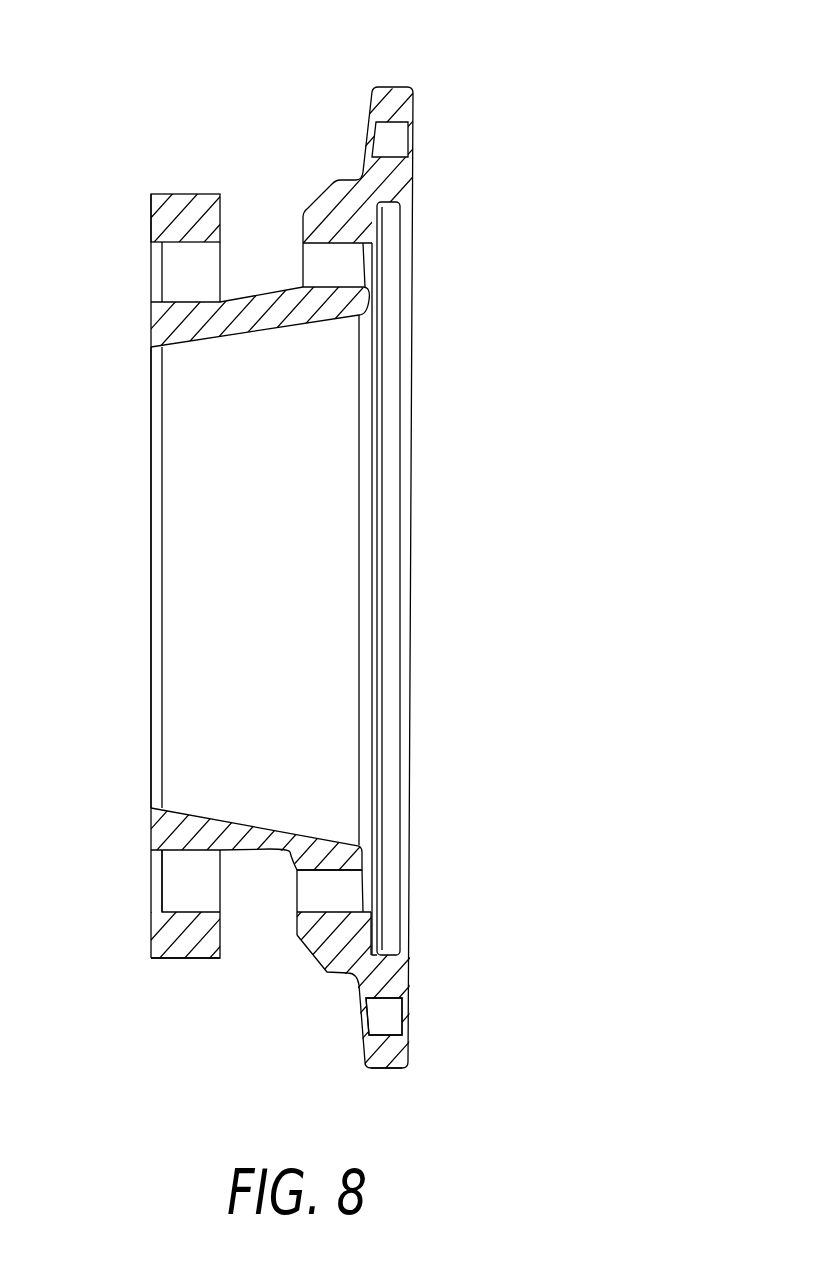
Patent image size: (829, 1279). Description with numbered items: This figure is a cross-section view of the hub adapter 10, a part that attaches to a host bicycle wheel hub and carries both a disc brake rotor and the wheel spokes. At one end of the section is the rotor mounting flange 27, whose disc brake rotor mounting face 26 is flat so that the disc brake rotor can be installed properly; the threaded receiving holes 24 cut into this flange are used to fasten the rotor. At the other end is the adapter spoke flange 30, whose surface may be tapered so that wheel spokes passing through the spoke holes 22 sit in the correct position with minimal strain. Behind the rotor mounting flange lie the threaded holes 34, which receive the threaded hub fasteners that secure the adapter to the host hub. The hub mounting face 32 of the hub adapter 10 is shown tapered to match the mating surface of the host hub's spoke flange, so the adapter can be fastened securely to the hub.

The hub adapter 10 is at (404, 76).
The spoke holes 22 is at (387, 1017).
The threaded receiving holes 24 is at (180, 880).
The disc brake rotor mounting face 26 is at (150, 828).
The rotor mounting flange 27 is at (183, 958).
The adapter spoke flange 30 is at (387, 1068).
The hub mounting face 32 is at (386, 932).
The threaded holes 34 is at (337, 892).